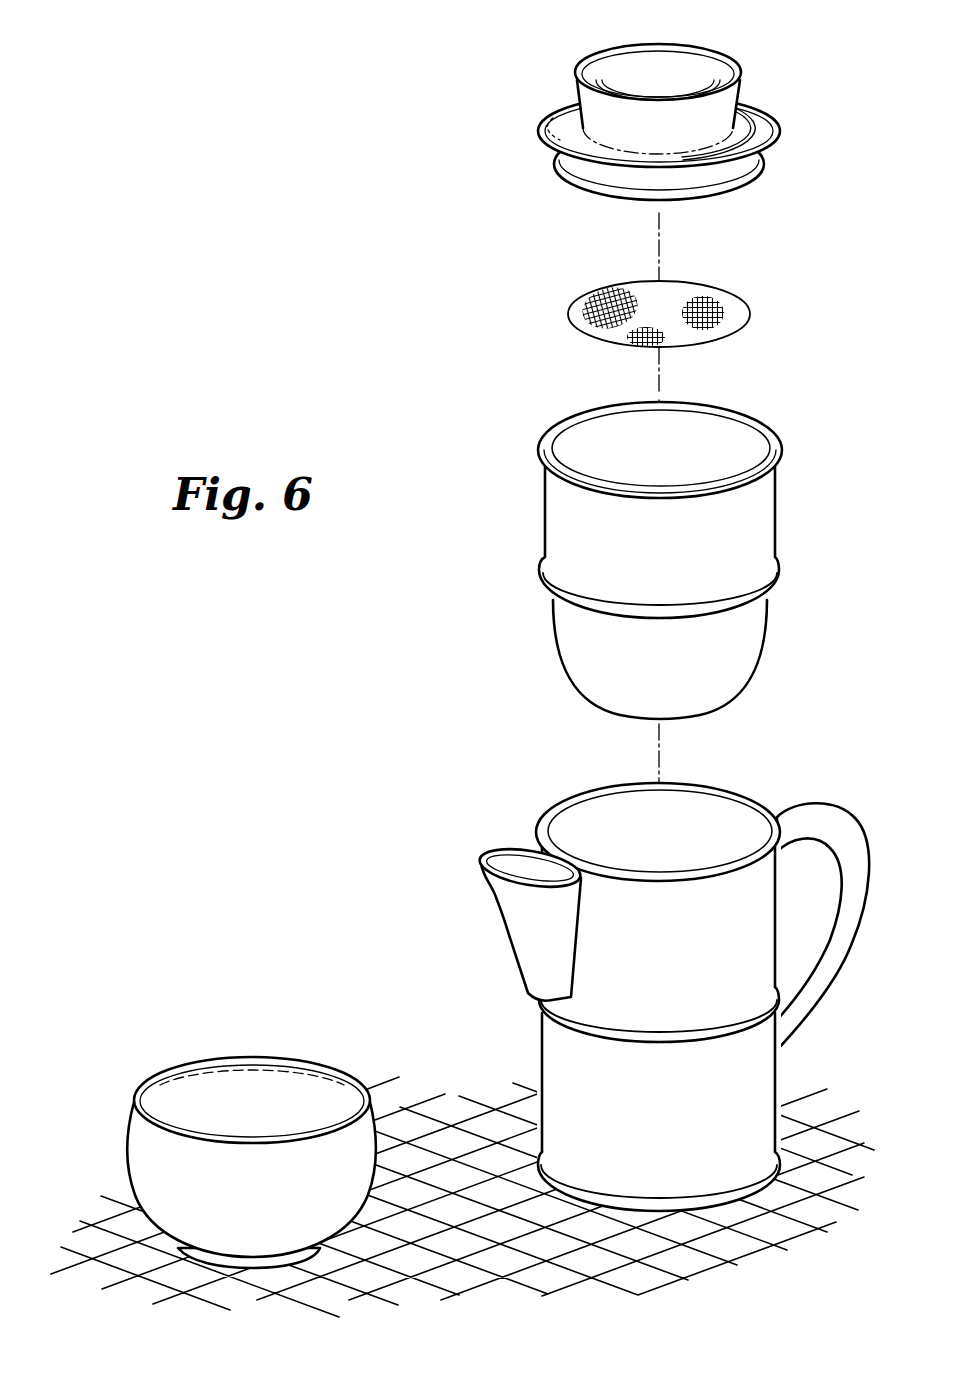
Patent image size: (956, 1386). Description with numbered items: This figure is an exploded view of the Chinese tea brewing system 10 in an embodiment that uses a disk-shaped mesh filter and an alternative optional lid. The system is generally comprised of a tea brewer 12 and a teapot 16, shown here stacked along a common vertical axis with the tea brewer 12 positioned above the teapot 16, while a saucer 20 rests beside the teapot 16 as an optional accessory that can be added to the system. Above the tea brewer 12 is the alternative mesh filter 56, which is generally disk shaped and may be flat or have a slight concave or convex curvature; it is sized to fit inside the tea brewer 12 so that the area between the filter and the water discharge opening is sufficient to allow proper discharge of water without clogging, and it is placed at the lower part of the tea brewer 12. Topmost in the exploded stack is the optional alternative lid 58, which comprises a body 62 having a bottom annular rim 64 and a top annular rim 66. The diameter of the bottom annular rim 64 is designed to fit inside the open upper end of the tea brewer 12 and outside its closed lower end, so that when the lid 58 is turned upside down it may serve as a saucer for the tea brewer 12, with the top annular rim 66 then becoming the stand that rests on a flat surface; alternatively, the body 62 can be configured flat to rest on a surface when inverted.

The Chinese tea brewing system 10 is at (327, 395).
The tea brewer 12 is at (728, 534).
The teapot 16 is at (578, 1068).
The saucer 20 is at (150, 1160).
The mesh filter 56 is at (733, 308).
The lid 58 is at (742, 117).
The body 62 is at (753, 135).
The bottom annular rim 64 is at (740, 172).
The top annular rim 66 is at (710, 72).